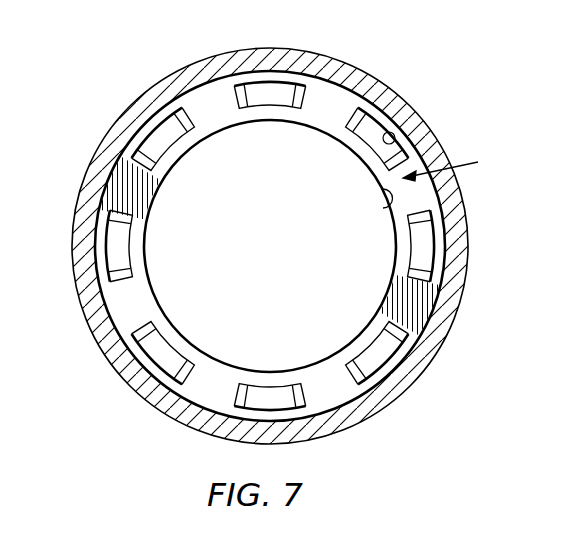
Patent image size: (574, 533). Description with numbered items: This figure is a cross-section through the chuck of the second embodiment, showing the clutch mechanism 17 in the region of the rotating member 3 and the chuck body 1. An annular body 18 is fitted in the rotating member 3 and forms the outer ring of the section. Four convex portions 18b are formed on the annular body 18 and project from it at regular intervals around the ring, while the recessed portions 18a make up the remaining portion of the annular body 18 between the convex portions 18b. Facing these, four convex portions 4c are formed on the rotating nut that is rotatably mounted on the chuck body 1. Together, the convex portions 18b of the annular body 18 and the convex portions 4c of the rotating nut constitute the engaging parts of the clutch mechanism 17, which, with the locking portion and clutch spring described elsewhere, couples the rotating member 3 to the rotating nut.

The chuck body 1 is at (384, 207).
The rotating member 3 is at (173, 76).
The convex portions 4c is at (143, 140).
The clutch mechanism 17 is at (452, 167).
The annular body 18 is at (347, 100).
The recessed portions 18a is at (417, 318).
The convex portions 18b is at (283, 86).